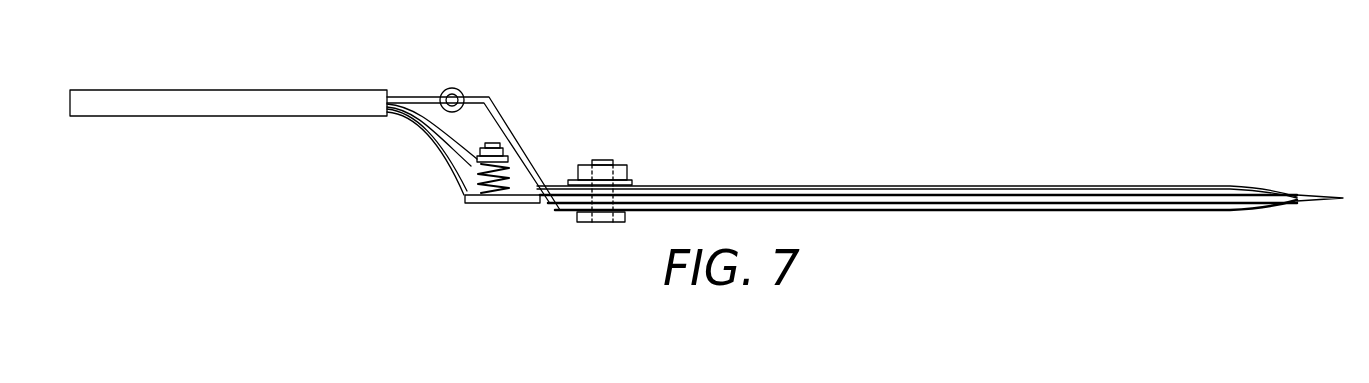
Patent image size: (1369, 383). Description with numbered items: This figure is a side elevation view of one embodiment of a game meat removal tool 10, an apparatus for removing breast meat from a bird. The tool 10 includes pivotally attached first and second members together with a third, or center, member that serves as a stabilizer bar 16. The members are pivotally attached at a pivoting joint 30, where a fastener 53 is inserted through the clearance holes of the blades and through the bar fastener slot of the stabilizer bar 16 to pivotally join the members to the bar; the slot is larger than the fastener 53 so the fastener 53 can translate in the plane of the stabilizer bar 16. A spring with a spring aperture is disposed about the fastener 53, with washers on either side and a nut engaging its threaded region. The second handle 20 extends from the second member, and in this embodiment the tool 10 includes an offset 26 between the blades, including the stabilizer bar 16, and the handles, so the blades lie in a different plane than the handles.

The meat removal tool 10 is at (1044, 121).
The stabilizer bar 16 is at (1267, 195).
The second handle 20 is at (198, 90).
The offset 26 is at (528, 123).
The pivoting joint 30 is at (611, 145).
The fastener 53 is at (595, 223).